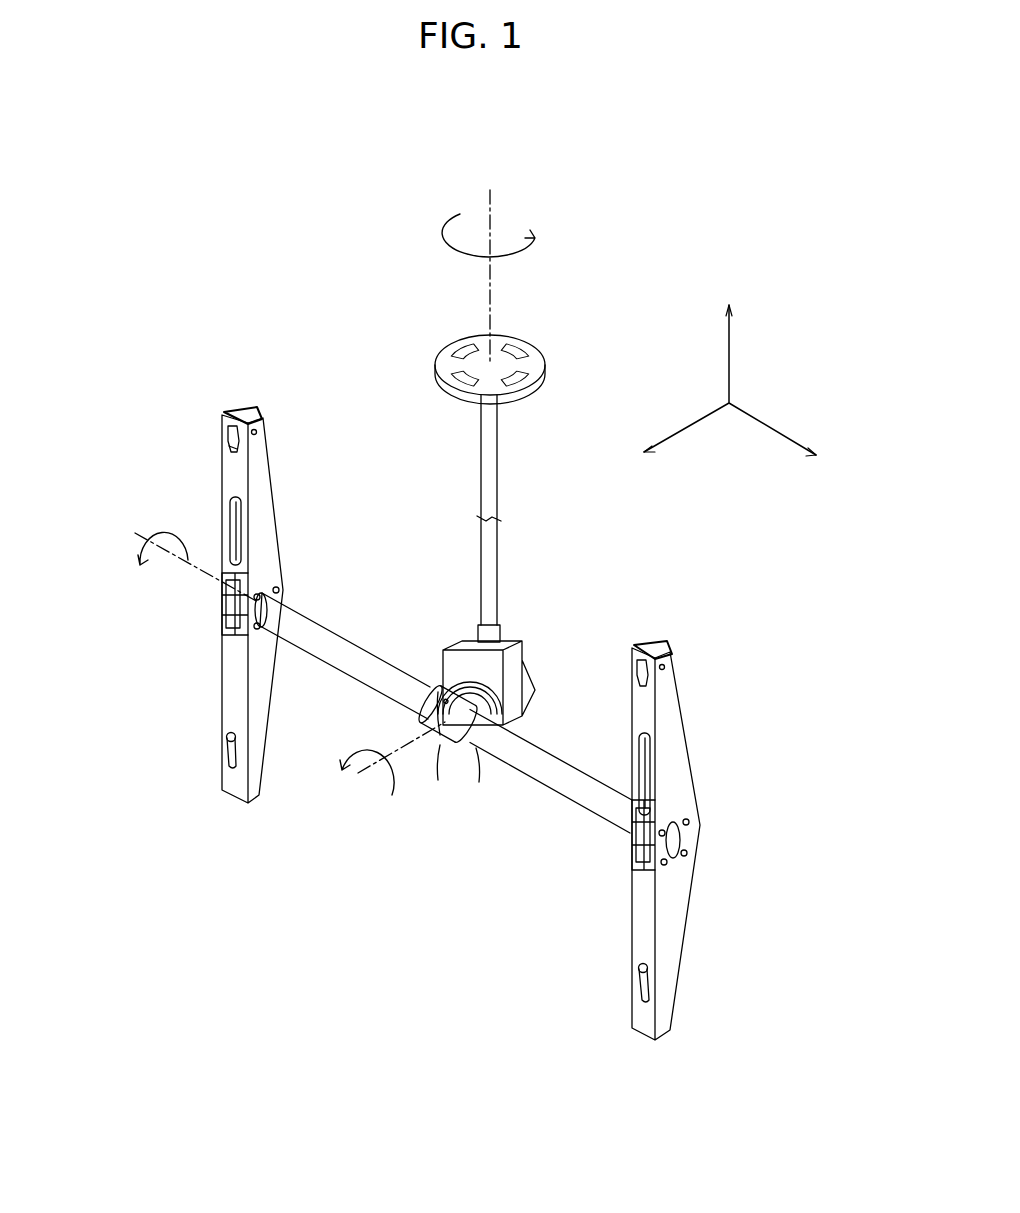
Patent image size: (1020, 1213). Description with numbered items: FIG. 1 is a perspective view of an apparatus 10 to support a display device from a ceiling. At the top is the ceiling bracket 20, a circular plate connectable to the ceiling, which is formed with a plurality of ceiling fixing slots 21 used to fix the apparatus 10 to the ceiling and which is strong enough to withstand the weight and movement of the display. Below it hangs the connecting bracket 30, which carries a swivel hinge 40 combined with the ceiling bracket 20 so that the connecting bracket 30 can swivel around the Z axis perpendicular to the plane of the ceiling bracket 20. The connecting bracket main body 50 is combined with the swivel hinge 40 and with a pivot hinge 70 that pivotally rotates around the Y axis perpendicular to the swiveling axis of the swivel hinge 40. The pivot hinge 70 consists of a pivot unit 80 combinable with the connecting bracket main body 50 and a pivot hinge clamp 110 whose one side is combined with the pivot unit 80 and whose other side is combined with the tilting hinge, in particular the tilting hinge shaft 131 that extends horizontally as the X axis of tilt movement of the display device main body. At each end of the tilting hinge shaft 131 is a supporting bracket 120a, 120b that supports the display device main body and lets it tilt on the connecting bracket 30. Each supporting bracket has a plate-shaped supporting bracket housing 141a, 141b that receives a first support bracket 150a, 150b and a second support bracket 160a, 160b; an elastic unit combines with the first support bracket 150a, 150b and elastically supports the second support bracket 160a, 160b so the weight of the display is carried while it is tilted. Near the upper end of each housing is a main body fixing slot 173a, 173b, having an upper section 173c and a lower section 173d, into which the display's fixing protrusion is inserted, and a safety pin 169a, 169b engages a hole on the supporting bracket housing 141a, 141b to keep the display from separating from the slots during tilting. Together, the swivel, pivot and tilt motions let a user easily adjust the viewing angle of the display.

The apparatus to support a display device 10 is at (170, 236).
The ceiling bracket 20 is at (518, 297).
The ceiling fixing slots 21 is at (532, 360).
The connecting bracket 30 is at (450, 562).
The swivel hinge 40 is at (472, 650).
The connecting bracket main body 50 is at (446, 662).
The pivot hinge 70 is at (457, 824).
The pivot unit 80 is at (470, 750).
The pivot hinge clamp 110 is at (455, 740).
The tilting hinge shaft 131 is at (558, 780).
The supporting bracket 120a is at (104, 700).
The supporting bracket 120b is at (776, 940).
The supporting bracket housing 141a is at (211, 574).
The supporting bracket housing 141b is at (684, 811).
The first support bracket 150a is at (222, 596).
The first support bracket 150b is at (680, 836).
The second support bracket 160a is at (226, 620).
The second support bracket 160b is at (680, 850).
The safety pin 169a is at (262, 418).
The safety pin 169b is at (668, 655).
The main body fixing slot 173a is at (230, 437).
The main body fixing slot 173b is at (641, 650).
The upper section of the main body fixing slot 173c is at (232, 413).
The lower section of the main body fixing slot 173d is at (230, 450).